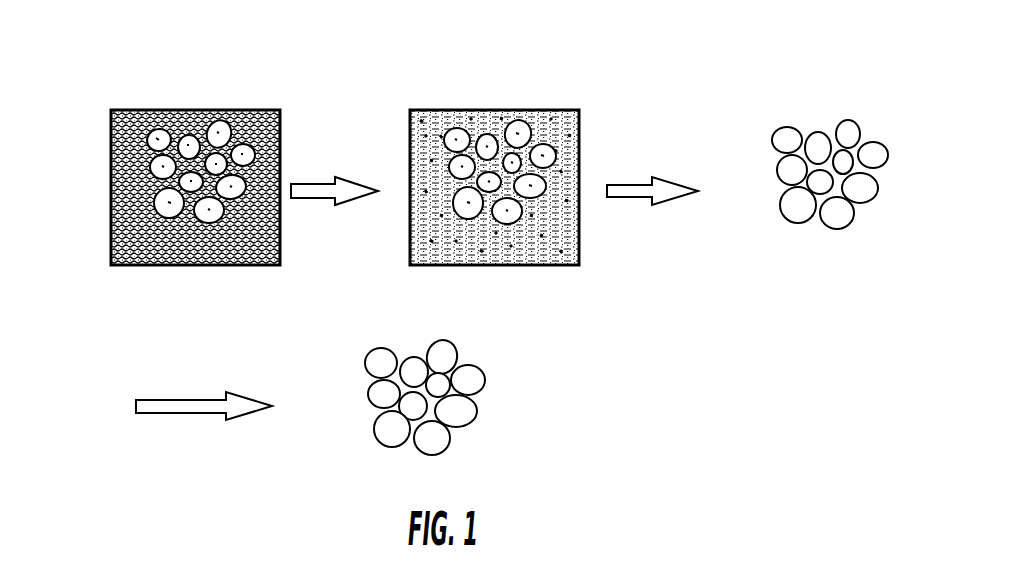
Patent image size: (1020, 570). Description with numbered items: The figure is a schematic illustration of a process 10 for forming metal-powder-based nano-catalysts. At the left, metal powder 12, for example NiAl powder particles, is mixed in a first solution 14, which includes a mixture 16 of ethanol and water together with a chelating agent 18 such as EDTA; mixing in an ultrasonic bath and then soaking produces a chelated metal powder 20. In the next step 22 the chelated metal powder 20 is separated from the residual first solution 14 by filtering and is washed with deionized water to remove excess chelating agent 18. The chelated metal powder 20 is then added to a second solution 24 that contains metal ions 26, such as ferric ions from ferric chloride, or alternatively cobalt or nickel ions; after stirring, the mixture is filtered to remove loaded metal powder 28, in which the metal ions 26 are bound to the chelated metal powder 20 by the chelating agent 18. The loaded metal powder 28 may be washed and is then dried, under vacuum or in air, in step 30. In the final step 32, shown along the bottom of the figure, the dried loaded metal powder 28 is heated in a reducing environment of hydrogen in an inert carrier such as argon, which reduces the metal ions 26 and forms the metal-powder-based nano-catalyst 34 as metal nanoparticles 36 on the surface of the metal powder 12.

The process 10 is at (716, 351).
The metal powder 12 is at (148, 110).
The first solution 14 is at (103, 268).
The mixture 16 is at (262, 110).
The chelating agent 18 is at (185, 110).
The chelated metal powder 20 is at (484, 128).
The step 22 is at (633, 272).
The second solution 24 is at (547, 122).
The metal ions 26 is at (527, 243).
The loaded metal powder 28 is at (812, 105).
The step 30 is at (751, 82).
The final step 32 is at (117, 383).
The metal-powder-based nano-catalyst 34 is at (488, 405).
The metal nanoparticles 36 is at (400, 352).